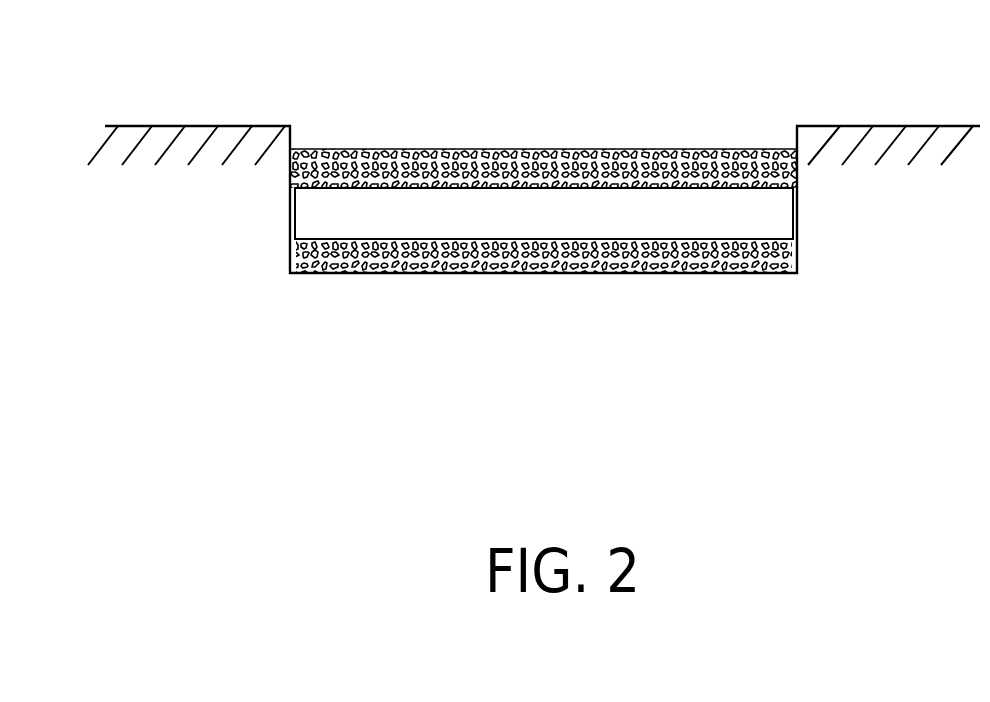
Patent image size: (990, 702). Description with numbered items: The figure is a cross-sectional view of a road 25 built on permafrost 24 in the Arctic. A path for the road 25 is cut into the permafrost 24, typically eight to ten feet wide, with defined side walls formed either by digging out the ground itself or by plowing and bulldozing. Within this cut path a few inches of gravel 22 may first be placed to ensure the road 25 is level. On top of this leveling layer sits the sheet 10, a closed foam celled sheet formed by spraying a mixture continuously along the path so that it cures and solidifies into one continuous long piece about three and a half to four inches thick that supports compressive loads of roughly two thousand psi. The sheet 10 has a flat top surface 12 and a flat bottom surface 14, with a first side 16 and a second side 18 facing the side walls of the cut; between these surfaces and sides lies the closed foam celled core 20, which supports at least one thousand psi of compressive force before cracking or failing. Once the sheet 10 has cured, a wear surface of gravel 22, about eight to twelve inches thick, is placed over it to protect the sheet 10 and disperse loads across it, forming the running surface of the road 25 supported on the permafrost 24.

The sheet 10 is at (537, 187).
The top surface 12 is at (609, 176).
The bottom surface 14 is at (636, 255).
The first side 16 is at (285, 212).
The second side 18 is at (808, 200).
The closed foam celled core 20 is at (418, 212).
The gravel 22 is at (268, 327).
The permafrost 24 is at (533, 421).
The road 25 is at (471, 137).